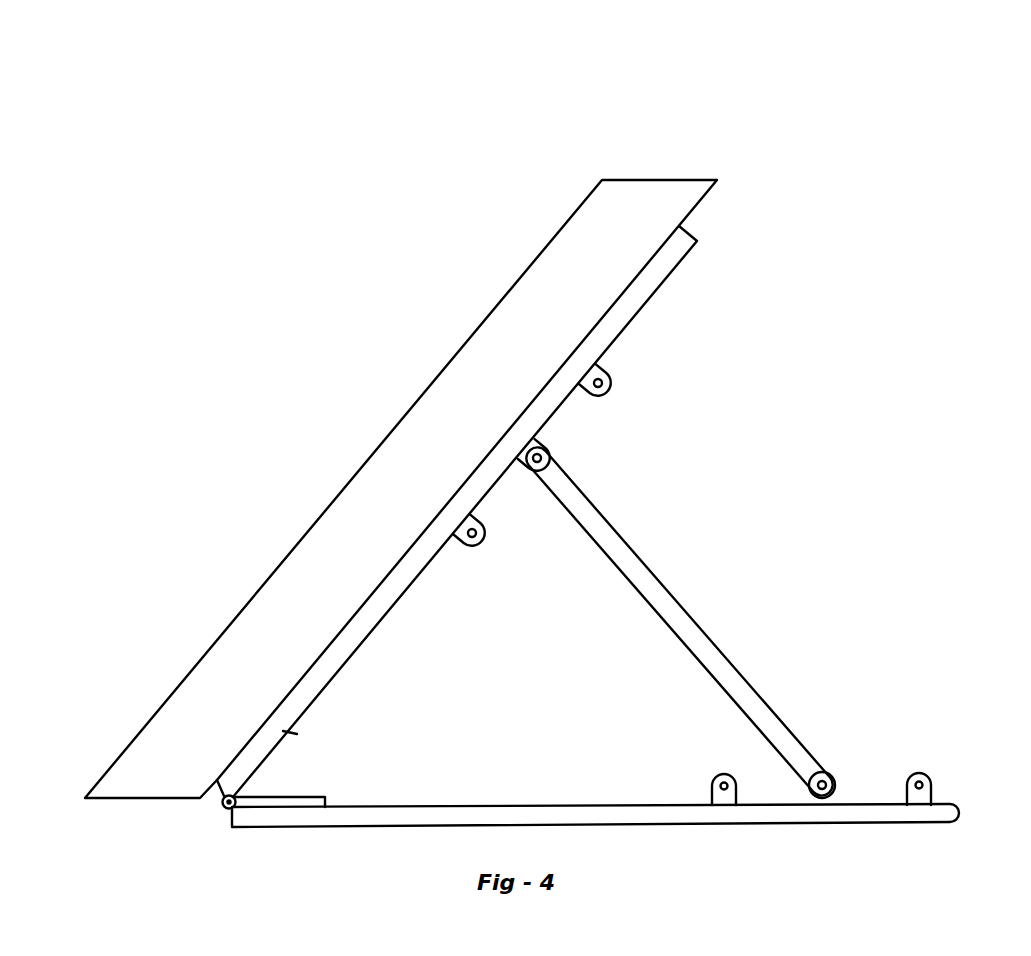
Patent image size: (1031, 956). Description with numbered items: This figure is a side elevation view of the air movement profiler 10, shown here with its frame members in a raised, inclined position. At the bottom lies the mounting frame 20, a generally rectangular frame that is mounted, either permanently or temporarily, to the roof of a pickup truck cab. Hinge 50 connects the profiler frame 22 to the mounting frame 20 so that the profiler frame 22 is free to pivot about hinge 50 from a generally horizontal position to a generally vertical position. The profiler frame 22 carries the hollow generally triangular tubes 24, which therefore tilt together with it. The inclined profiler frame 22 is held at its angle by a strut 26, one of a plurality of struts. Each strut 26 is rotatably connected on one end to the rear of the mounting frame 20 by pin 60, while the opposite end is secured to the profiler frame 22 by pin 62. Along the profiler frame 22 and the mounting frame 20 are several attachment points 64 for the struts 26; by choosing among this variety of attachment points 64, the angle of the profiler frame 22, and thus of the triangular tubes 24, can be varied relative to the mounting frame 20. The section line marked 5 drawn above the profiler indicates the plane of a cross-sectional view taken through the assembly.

The section line 5- 5 is at (747, 112).
The air movement profiler 10 is at (397, 300).
The mounting frame 20 is at (958, 801).
The profiler frame 22 is at (667, 260).
The hollow generally triangular tubes 24 is at (565, 259).
The struts 26 is at (690, 612).
The hinge 50 is at (277, 757).
The pin 60 is at (823, 777).
The pin 62 is at (540, 466).
The attachment points 64 is at (612, 386).